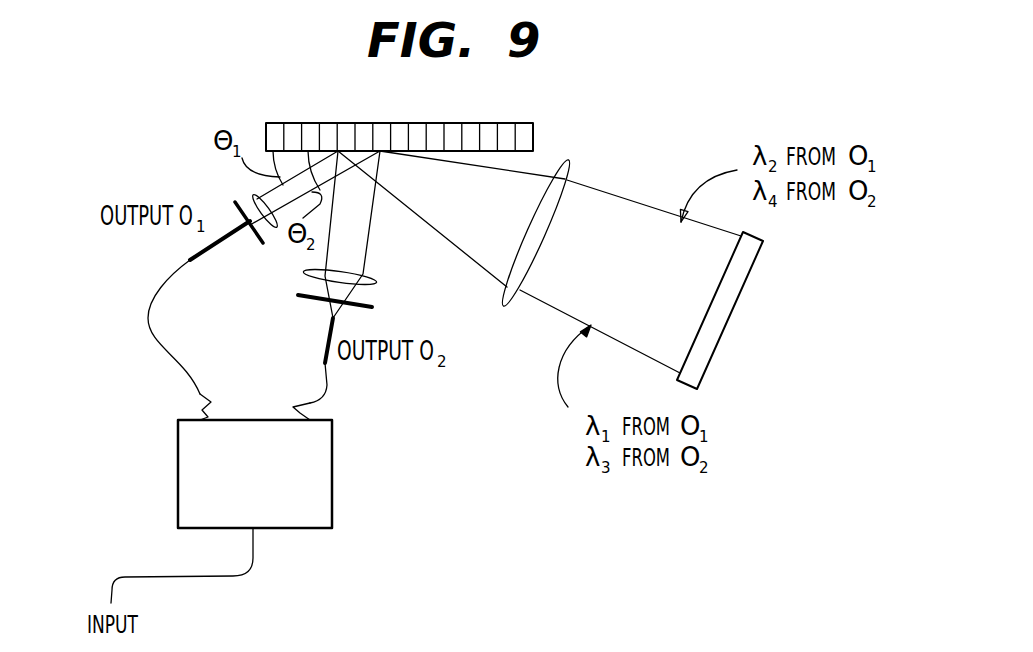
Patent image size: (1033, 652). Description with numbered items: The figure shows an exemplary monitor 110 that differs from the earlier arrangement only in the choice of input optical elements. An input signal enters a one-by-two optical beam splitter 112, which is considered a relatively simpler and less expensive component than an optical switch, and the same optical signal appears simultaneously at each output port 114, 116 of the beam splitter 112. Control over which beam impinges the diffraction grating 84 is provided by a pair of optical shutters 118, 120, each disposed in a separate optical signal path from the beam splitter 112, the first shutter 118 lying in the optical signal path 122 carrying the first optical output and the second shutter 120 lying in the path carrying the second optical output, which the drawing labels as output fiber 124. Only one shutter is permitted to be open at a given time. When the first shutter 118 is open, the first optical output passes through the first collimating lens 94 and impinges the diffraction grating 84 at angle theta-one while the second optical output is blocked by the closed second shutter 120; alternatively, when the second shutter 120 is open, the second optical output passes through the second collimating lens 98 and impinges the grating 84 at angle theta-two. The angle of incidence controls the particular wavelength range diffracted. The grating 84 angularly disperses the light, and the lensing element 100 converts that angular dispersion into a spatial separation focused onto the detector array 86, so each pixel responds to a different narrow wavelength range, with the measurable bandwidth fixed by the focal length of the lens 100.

The diffraction grating 84 is at (330, 123).
The detector array 86 is at (735, 312).
The first collimating lens 94 is at (254, 196).
The second collimating lens 98 is at (367, 270).
The lensing element 100 is at (568, 163).
The monitor 110 is at (480, 482).
The 1×2 optical beam splitter 112 is at (332, 490).
The output port 114 is at (221, 392).
The output port 116 is at (300, 403).
The first optical shutter 118 is at (263, 250).
The second optical shutter 120 is at (373, 308).
The optical signal path 122 is at (147, 313).
The output fiber O2 124 is at (325, 360).